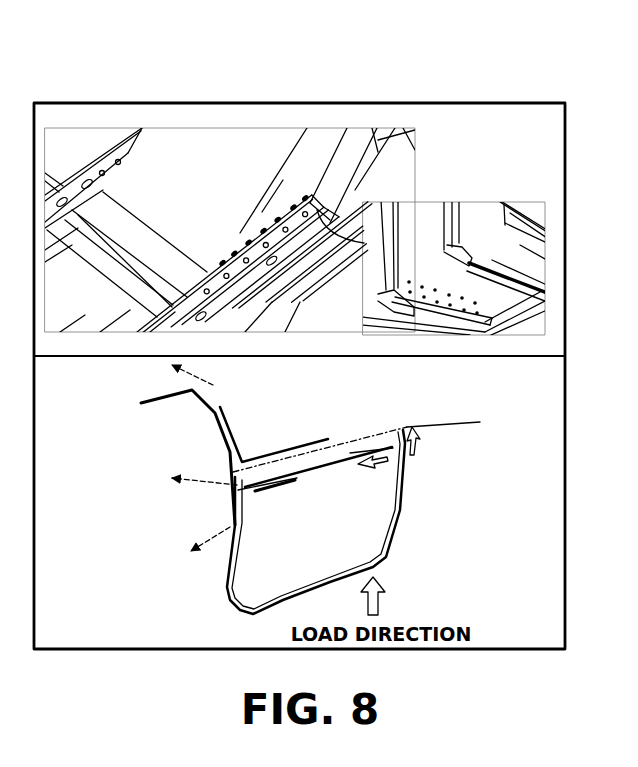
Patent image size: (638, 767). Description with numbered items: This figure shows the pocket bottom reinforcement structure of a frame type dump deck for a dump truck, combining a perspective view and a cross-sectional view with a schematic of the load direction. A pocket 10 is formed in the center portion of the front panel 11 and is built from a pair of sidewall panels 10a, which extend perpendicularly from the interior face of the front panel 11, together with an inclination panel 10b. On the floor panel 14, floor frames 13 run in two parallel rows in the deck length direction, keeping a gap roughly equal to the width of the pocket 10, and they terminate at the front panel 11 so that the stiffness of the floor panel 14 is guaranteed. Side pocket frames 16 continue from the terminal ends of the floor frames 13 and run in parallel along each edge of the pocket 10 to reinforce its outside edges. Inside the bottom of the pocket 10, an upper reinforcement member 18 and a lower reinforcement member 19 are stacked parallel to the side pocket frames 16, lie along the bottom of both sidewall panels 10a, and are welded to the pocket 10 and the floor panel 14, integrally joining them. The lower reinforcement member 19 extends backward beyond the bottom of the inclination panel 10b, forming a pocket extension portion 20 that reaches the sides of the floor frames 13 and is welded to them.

The pocket 10 is at (258, 53).
The sidewall panels 10a is at (192, 153).
The inclination panel 10b is at (285, 183).
The front panel 11 is at (377, 220).
The floor frames 13 is at (533, 257).
The floor panel 14 is at (318, 300).
The side pocket frames 16 is at (448, 215).
The upper reinforcement member 18 is at (243, 267).
The lower reinforcement member 19 is at (230, 292).
The pocket extension portion 20 is at (466, 285).